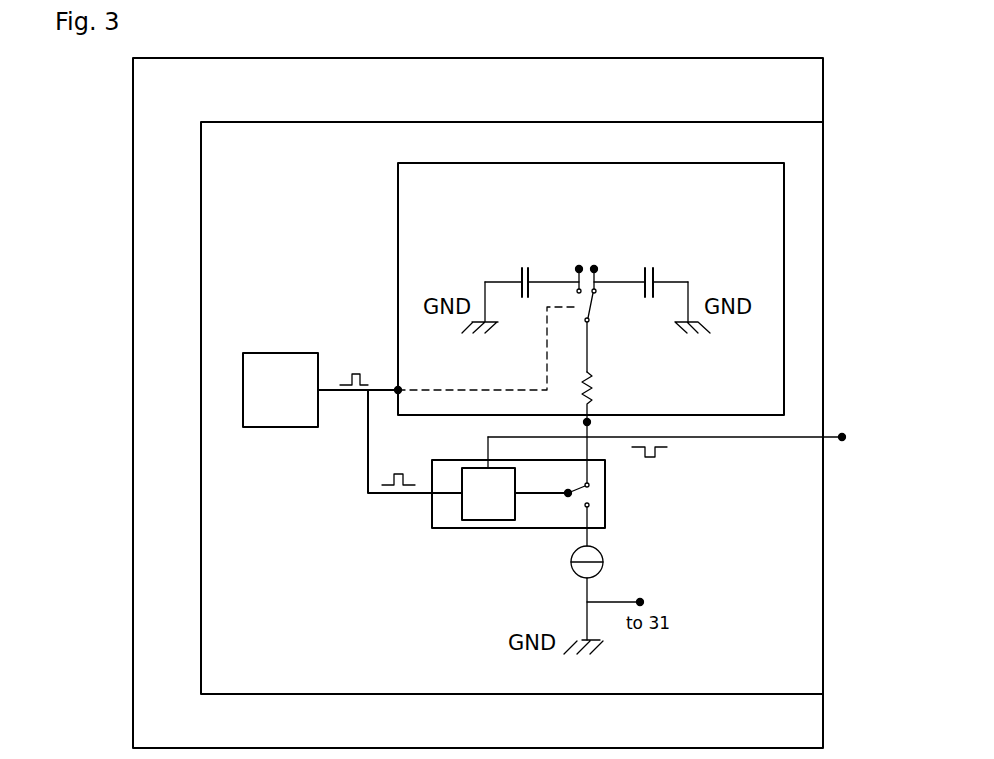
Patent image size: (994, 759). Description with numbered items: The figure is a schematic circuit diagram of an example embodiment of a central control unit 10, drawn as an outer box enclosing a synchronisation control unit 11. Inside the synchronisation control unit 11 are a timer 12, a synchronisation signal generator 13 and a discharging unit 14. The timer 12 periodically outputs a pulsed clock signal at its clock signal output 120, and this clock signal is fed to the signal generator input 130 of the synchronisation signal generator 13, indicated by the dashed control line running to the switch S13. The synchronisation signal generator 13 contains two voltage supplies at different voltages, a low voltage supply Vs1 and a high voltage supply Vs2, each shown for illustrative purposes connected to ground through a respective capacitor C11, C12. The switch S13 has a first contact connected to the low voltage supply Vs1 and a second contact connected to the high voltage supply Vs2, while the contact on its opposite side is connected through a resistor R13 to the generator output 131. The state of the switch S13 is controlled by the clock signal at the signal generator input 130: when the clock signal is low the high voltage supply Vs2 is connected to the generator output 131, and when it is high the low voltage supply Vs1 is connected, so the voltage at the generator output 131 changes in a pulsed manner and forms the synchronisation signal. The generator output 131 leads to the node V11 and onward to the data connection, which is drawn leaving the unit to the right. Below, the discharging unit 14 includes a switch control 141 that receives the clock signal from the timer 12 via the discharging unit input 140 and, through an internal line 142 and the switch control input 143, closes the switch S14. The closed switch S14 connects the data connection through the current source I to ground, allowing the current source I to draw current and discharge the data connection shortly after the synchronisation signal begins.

The central control unit 10 is at (167, 85).
The synchronisation control unit 11 is at (210, 149).
The timer 12 is at (293, 378).
The synchronisation signal generator 13 is at (404, 189).
The discharging unit 14 is at (573, 485).
The clock signal output 120 is at (320, 392).
The signal generator input 130 is at (398, 390).
The generator output 131 is at (587, 422).
The discharging unit input 140 is at (458, 495).
The switch control 141 is at (507, 493).
The output line 142 is at (512, 495).
The switch control input 143 is at (568, 495).
The capacitor C11 is at (537, 277).
The capacitor C12 is at (642, 277).
The low voltage supply Vs1 is at (562, 268).
The high voltage supply Vs2 is at (611, 268).
The switch S13 is at (590, 310).
The resistor R13 is at (590, 390).
The node V11 is at (587, 437).
The switch S14 is at (605, 493).
The current source I is at (603, 562).